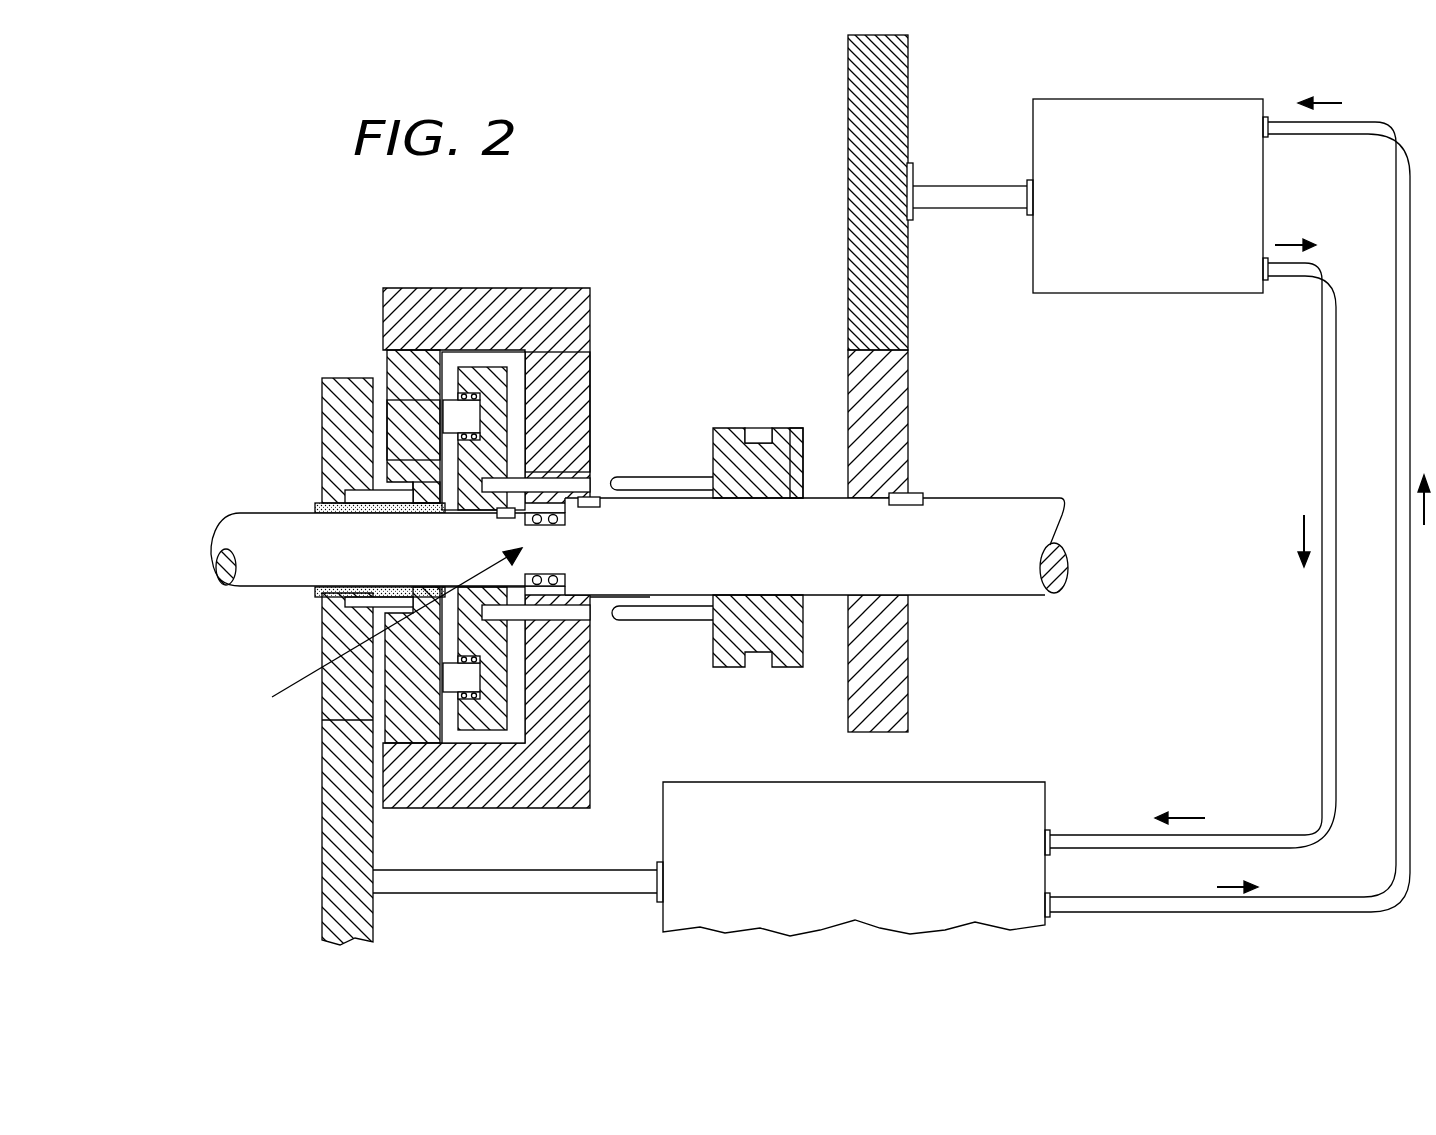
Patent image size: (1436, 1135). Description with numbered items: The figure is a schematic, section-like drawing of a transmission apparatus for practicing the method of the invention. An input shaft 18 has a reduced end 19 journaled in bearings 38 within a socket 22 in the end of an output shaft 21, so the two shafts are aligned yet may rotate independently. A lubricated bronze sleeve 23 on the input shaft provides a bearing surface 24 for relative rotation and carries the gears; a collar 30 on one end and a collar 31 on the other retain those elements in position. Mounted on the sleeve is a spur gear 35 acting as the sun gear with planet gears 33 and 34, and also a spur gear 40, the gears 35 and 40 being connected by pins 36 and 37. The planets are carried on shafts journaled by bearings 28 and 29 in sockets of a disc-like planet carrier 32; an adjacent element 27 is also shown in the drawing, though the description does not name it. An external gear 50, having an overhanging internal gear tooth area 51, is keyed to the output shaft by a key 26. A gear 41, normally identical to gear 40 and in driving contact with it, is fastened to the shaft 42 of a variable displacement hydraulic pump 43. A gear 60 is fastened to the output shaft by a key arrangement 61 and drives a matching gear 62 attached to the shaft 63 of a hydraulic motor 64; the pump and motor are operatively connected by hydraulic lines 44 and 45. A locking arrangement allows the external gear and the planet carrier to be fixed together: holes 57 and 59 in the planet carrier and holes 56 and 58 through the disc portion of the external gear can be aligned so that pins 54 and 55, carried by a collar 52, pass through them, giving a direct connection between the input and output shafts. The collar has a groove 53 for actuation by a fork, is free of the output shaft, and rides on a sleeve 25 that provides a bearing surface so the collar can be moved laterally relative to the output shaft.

The input shaft 18 is at (243, 533).
The reduced end 19 is at (379, 627).
The output shaft 21 is at (1037, 513).
The socket 22 is at (512, 504).
The sleeve 23 is at (330, 508).
The bearing surface 24 is at (360, 572).
The sleeve 25 is at (798, 480).
The key 26 is at (595, 498).
The piston 27 is at (495, 482).
The bearing 28 is at (478, 398).
The bearing 29 is at (473, 697).
The collar 30 is at (393, 437).
The collar 31 is at (310, 593).
The planet carrier 32 is at (517, 372).
The planet gear 33 is at (400, 368).
The planet gear 34 is at (407, 700).
The spur gear 35 is at (387, 483).
The pin 36 is at (385, 607).
The pin 37 is at (367, 498).
The bearings 38 is at (592, 598).
The spur gear 40 is at (333, 438).
The gear 41 is at (345, 808).
The shaft 42 is at (405, 882).
The variable displacement hydraulic pump 43 is at (983, 790).
The hydraulic line 44 is at (1083, 842).
The hydraulic line 45 is at (1310, 903).
The external gear 50 is at (563, 772).
The internal gear tooth area 51 is at (414, 352).
The collar 52 is at (727, 442).
The groove 53 is at (757, 427).
The pin 54 is at (702, 612).
The pin 55 is at (655, 483).
The hole 56 is at (567, 610).
The hole 57 is at (490, 607).
The hole 58 is at (555, 483).
The hole 59 is at (593, 355).
The gear 60 is at (897, 402).
The key arrangement 61 is at (910, 495).
The gear 62 is at (899, 104).
The shaft 63 is at (938, 198).
The hydraulic motor 64 is at (1180, 117).